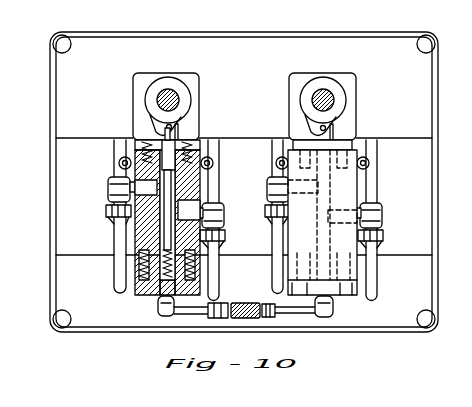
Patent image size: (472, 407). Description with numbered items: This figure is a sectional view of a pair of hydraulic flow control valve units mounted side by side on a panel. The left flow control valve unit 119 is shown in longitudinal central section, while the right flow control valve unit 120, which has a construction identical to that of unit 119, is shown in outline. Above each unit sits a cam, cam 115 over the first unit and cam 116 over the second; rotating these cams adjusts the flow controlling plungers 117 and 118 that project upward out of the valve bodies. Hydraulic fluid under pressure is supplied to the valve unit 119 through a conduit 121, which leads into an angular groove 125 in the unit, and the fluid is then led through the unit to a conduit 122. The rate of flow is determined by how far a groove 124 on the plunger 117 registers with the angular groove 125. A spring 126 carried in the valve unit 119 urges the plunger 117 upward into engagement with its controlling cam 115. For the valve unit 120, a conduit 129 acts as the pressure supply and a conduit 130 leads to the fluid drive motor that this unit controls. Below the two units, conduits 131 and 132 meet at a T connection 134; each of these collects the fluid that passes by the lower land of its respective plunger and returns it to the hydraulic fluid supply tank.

The cam 115 is at (188, 93).
The cam 116 is at (344, 95).
The flow controlling plunger 117 is at (163, 138).
The flow controlling plunger 118 is at (320, 136).
The flow control valve unit 119 is at (133, 172).
The flow control valve unit 120 is at (347, 179).
The conduit 121 is at (117, 237).
The conduit 122 is at (219, 272).
The groove 124 is at (202, 192).
The angular groove 125 is at (218, 172).
The spring 126 is at (157, 297).
The conduit 129 is at (280, 238).
The conduit 130 is at (378, 272).
The conduit 131 is at (185, 312).
The conduit 132 is at (300, 317).
The T connection 134 is at (243, 305).